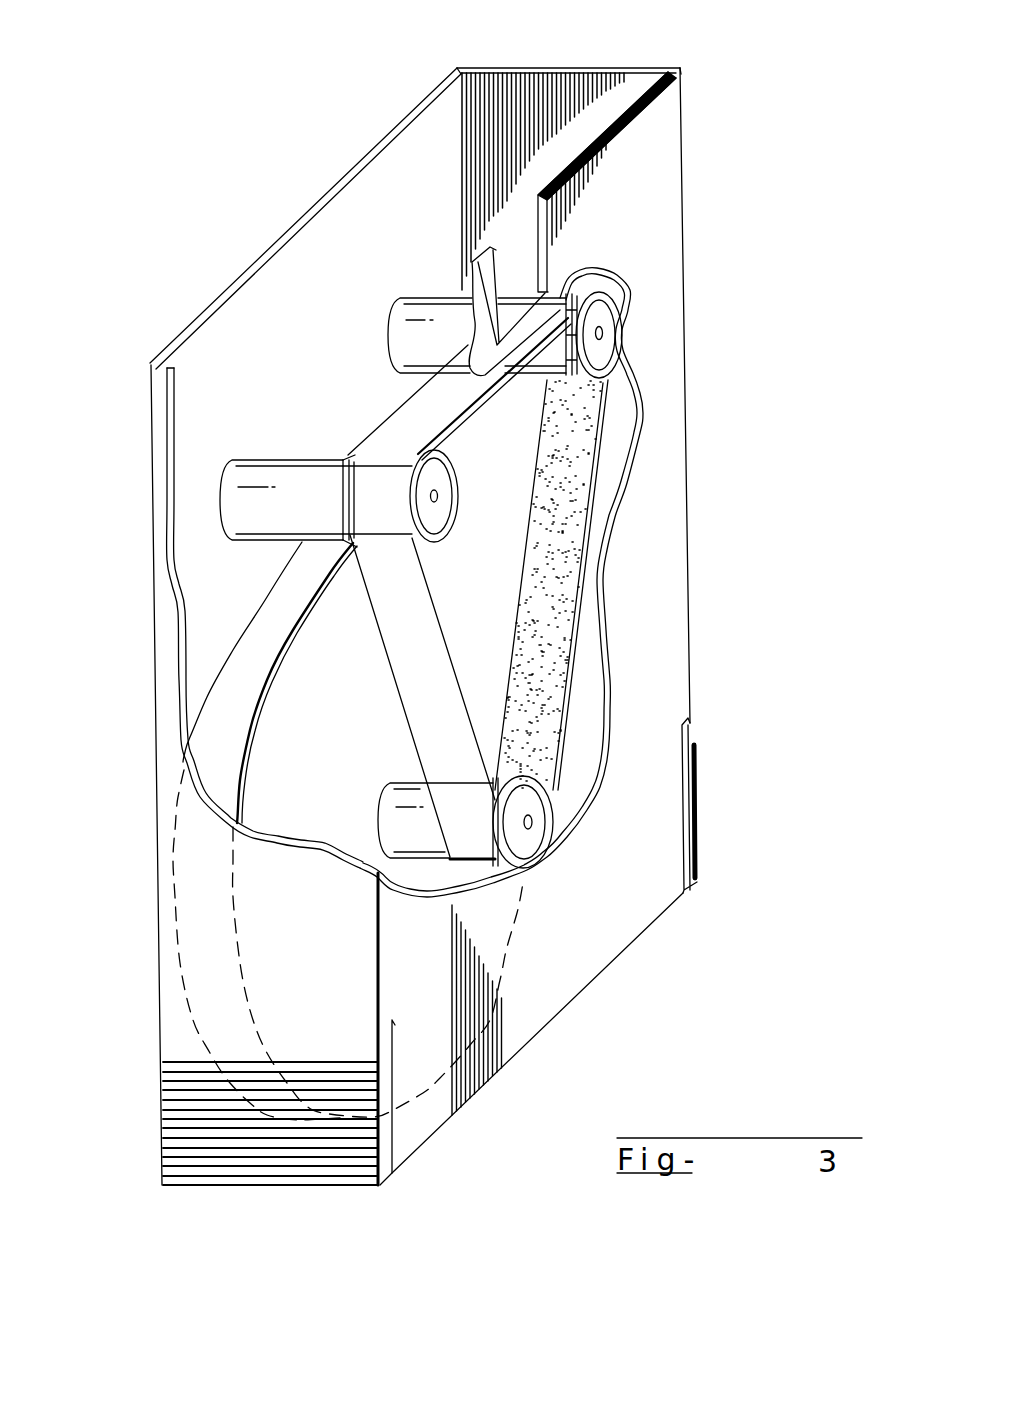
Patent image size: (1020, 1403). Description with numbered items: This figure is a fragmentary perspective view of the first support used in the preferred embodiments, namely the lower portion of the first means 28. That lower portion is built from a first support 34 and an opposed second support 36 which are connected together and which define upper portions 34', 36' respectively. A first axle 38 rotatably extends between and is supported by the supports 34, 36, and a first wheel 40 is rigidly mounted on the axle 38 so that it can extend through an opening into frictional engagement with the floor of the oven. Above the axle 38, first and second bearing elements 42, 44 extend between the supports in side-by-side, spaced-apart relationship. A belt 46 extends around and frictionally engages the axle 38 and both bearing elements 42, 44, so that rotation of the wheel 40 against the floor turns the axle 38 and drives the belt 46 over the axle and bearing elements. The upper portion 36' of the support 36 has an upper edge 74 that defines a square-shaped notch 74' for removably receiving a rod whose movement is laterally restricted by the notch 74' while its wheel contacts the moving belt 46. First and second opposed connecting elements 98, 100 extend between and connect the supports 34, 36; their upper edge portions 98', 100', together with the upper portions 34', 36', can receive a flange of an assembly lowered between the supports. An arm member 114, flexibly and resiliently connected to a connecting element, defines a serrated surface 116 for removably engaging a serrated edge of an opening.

The first means 28 is at (485, 616).
The first support 34 is at (297, 626).
The upper portion of first support 34' is at (359, 117).
The second support 36 is at (569, 620).
The upper portion of second support 36' is at (729, 94).
The first axle 38 is at (537, 800).
The first wheel 40 is at (509, 587).
The first bearing element 42 is at (285, 483).
The second bearing element 44 is at (600, 307).
The belt 46 is at (563, 497).
The upper edge 74 is at (651, 146).
The square-shaped notch 74' is at (460, 297).
The first connecting element 98 is at (365, 694).
The upper edge portion of first connecting element 98' is at (134, 336).
The second connecting element 100 is at (543, 151).
The upper edge portion of second connecting element 100' is at (581, 42).
The third arm member 114 is at (390, 1140).
The third serrated surface 116 is at (303, 1170).